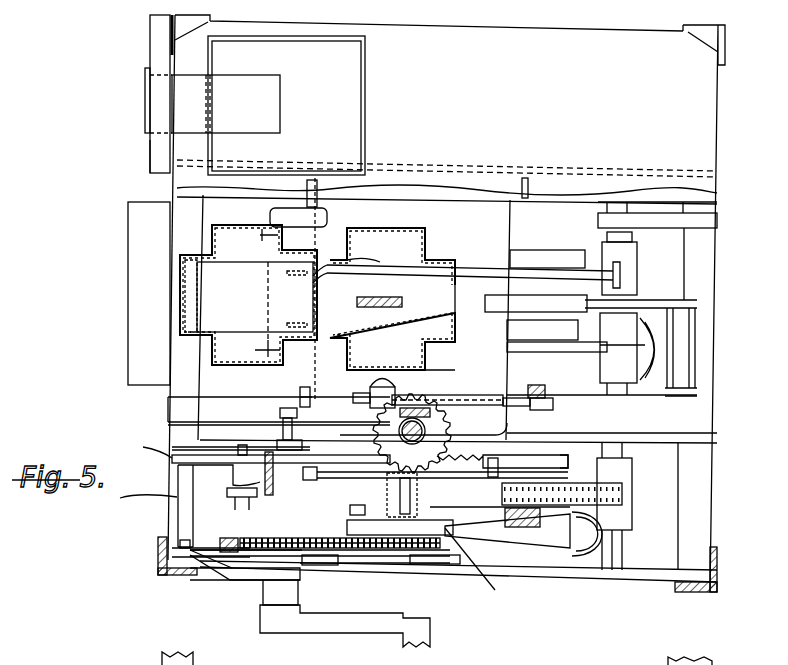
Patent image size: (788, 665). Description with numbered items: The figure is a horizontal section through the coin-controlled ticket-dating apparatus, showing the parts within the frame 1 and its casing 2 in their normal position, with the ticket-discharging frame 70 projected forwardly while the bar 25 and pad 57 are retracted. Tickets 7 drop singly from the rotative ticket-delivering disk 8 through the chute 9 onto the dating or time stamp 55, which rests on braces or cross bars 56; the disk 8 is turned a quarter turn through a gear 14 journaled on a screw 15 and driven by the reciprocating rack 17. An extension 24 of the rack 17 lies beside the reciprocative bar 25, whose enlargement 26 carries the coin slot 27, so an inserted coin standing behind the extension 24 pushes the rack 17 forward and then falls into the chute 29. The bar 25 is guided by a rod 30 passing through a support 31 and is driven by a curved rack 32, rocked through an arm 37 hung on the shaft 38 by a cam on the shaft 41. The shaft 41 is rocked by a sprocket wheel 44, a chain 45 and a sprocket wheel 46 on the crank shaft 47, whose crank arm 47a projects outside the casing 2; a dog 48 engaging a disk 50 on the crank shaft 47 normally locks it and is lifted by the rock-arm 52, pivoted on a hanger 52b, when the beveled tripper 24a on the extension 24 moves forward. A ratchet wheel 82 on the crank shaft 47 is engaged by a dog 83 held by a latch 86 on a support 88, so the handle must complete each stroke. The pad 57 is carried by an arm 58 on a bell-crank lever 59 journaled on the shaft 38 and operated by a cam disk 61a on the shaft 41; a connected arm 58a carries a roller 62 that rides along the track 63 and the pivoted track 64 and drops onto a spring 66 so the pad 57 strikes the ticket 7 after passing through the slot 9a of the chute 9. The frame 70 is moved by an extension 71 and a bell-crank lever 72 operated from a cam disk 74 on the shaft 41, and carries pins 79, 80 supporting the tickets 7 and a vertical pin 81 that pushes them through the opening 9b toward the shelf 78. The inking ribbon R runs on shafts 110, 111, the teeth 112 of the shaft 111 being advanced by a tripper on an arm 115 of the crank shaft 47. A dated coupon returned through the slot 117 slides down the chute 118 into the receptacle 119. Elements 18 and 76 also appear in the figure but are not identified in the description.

The frame 1 is at (172, 26).
The casing 2 is at (158, 146).
The tickets 7 is at (249, 300).
The rotative ticket-delivering disk 8 is at (529, 188).
The guide or chute 9 is at (390, 228).
The slot in chute 9a is at (455, 305).
The opening in chute 9b is at (363, 249).
The gear 14 is at (412, 433).
The screw 15 is at (401, 431).
The rack 17 is at (468, 457).
The rack guide 18 is at (579, 458).
The extension 24 is at (450, 516).
The tripper 24a is at (485, 567).
The reciprocative bar 25 is at (544, 493).
The enlargement 26 is at (413, 537).
The coin slot 27 is at (417, 487).
The chute 29 is at (315, 470).
The extension or rod 30 is at (281, 473).
The support 31 is at (240, 480).
The curved rack 32 is at (620, 482).
The arm 37 is at (632, 497).
The rod or shaft 38 is at (615, 542).
The shaft 41 is at (440, 565).
The sprocket wheel 44 is at (545, 542).
The chain 45 is at (365, 550).
The sprocket wheel 46 is at (290, 553).
The crank shaft 47 is at (280, 438).
The crank arm 47a is at (352, 626).
The dog 48 is at (160, 570).
The disk 50 is at (323, 566).
The rock-arm 52 is at (150, 540).
The hanger 52b is at (292, 562).
The dating or time stamp 55 is at (414, 376).
The braces or cross bars 56 is at (187, 409).
The pad or hammer 57 is at (536, 303).
The arm 58 is at (652, 300).
The arm 58a is at (588, 352).
The bell-crank lever 59 is at (625, 345).
The disk 61a is at (512, 340).
The roller 62 is at (528, 394).
The track or way 63 is at (537, 412).
The pivoted track or way 64 is at (461, 394).
The spring 66 is at (363, 403).
The open frame 70 is at (212, 228).
The extension 71 is at (476, 268).
The bell-crank lever 72 is at (600, 252).
The disk 74 is at (533, 254).
The cylinder 76 is at (270, 215).
The shelf 78 is at (165, 367).
The pin 79 is at (255, 293).
The pin 80 is at (298, 321).
The vertically disposed pin 81 is at (330, 282).
The ratchet wheel 82 is at (369, 508).
The dog 83 is at (230, 500).
The latch 86 is at (133, 512).
The support 88 is at (200, 462).
The shaft 110 is at (317, 200).
The shaft 111 is at (310, 398).
The teeth 112 is at (300, 393).
The arm 115 is at (280, 410).
The slot 117 is at (145, 88).
The chute 118 is at (226, 104).
The receptacle 119 is at (286, 105).
The inking ribbon R is at (402, 302).